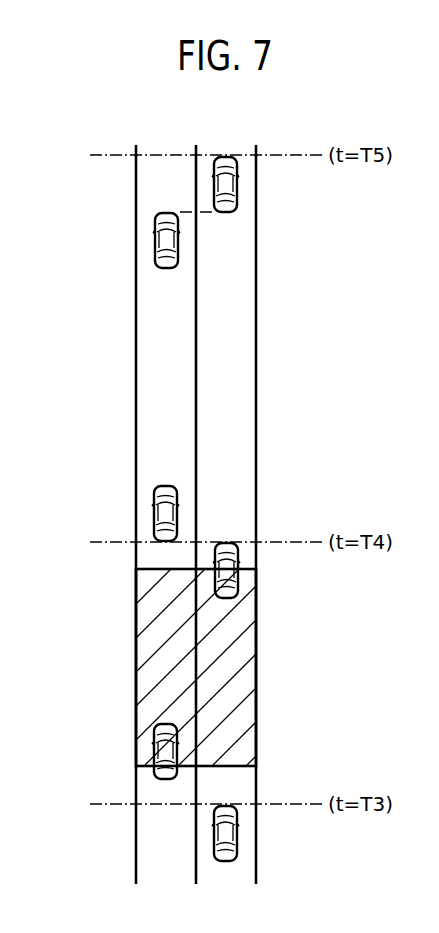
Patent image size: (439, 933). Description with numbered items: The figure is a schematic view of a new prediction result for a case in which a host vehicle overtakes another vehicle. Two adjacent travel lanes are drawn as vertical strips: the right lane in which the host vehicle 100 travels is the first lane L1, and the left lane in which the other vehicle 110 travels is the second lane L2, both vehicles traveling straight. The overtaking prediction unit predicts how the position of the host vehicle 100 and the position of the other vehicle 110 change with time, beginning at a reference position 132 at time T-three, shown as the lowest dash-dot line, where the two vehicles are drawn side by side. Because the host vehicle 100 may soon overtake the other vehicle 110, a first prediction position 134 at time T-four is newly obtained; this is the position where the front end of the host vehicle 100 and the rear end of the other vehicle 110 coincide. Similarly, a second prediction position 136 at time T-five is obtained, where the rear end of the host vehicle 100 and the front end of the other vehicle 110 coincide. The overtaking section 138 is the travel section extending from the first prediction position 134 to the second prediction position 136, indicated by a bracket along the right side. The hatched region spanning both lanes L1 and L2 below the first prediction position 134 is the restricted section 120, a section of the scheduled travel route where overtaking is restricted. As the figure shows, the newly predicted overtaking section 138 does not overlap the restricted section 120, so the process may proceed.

The host vehicle 100 is at (238, 189).
The other vehicle 110 is at (154, 243).
The restricted section 120 is at (281, 569).
The reference position 132 is at (112, 804).
The first prediction position 134 is at (112, 542).
The second prediction position 136 is at (112, 155).
The overtaking section 138 is at (307, 155).
The first lane L1 is at (226, 868).
The second lane L2 is at (168, 868).